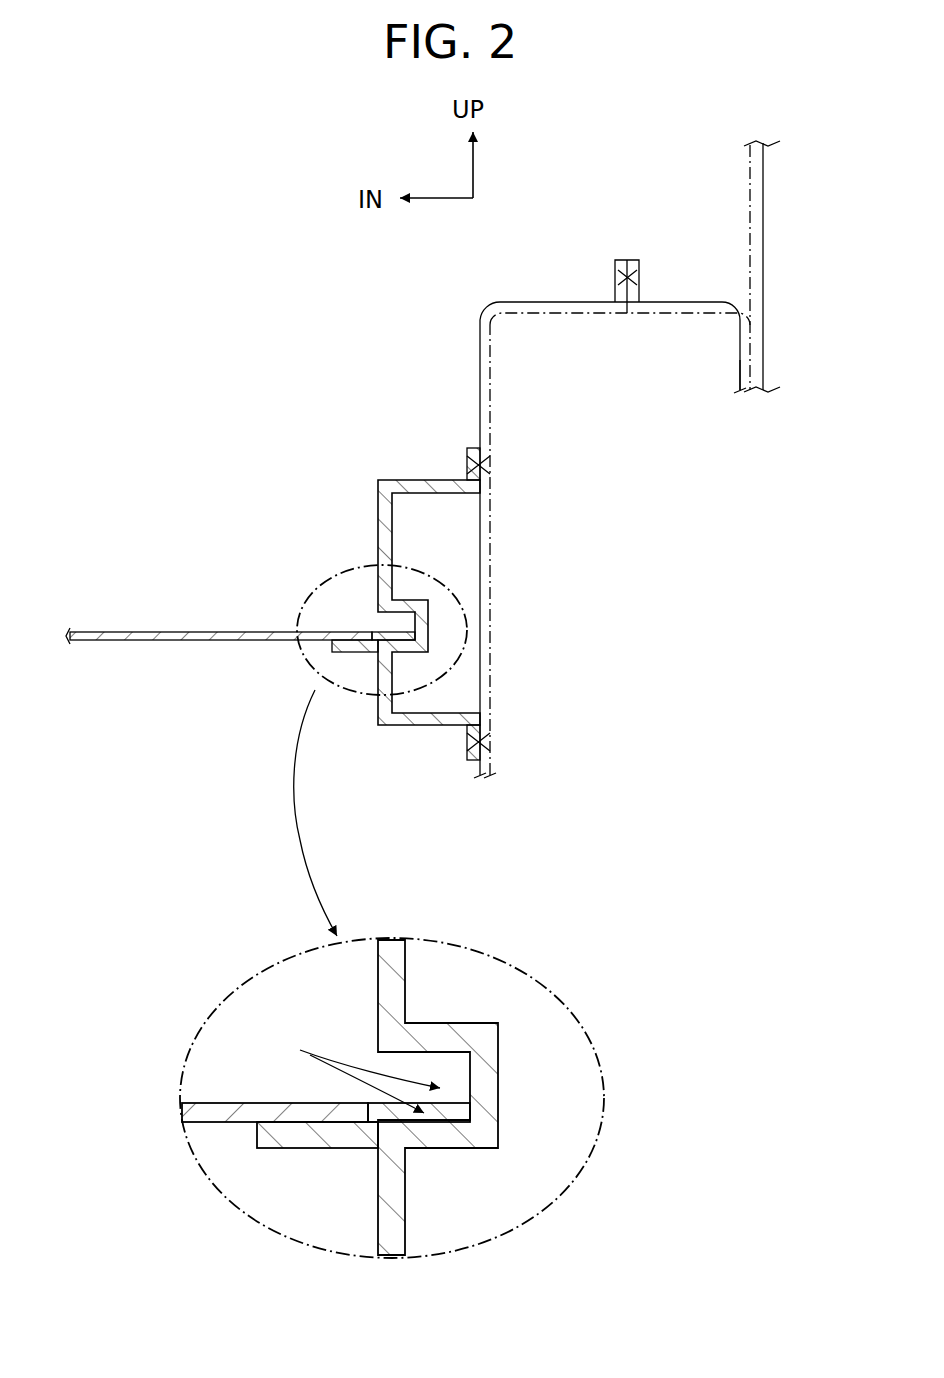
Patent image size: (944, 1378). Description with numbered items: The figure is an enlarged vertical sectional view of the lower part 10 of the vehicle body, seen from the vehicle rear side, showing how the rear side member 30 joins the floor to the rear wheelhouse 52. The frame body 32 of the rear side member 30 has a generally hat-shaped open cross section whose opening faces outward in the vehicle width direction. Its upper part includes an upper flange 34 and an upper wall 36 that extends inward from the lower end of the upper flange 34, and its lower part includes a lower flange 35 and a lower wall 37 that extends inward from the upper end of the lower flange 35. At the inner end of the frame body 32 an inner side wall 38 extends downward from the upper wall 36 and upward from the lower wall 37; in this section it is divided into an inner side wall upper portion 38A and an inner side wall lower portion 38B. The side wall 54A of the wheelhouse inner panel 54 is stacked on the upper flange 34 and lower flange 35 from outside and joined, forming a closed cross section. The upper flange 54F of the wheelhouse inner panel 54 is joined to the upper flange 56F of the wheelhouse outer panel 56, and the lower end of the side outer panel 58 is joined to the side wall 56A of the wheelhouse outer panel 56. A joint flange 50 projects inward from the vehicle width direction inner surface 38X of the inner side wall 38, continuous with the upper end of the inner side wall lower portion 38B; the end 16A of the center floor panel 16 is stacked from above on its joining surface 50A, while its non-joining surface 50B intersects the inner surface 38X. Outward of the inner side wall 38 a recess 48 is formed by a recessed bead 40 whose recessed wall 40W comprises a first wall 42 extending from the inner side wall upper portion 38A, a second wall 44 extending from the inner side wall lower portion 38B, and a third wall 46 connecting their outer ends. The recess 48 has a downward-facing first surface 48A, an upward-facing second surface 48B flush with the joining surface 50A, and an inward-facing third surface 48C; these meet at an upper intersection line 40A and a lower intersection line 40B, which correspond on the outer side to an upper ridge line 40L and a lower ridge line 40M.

The lower part of the vehicle body 10 is at (71, 419).
The center floor panel 16 is at (143, 627).
The end of the center floor panel 16A is at (335, 633).
The rear side member 30 is at (337, 345).
The frame body 32 is at (423, 397).
The upper flange 34 is at (467, 460).
The lower flange 35 is at (468, 735).
The upper wall 36 is at (425, 480).
The lower wall 37 is at (425, 727).
The inner side wall 38 is at (378, 505).
The inner side wall upper portion 38A is at (378, 548).
The inner side wall lower portion 38B is at (380, 715).
The vehicle width direction inner surface 38X is at (380, 705).
The recessed bead 40 is at (375, 1052).
The upper intersection line 40A is at (472, 1054).
The lower intersection line 40B is at (498, 1135).
The upper ridge line 40L is at (498, 1025).
The lower ridge line 40M is at (458, 1150).
The recessed wall 40W is at (350, 1090).
The first wall 42 is at (443, 1016).
The second wall 44 is at (406, 1225).
The third wall 46 is at (511, 1083).
The recess 48 is at (397, 623).
The first surface 48A is at (453, 1056).
The second surface 48B is at (443, 1154).
The third surface 48C is at (472, 1100).
The joint flange 50 is at (351, 917).
The joining surface 50A is at (325, 628).
The non-joining surface 50B is at (285, 1150).
The rear wheelhouse 52 is at (612, 458).
The wheelhouse inner panel 54 is at (612, 485).
The side wall of the wheelhouse inner panel 54A is at (492, 563).
The upper flange of the wheelhouse inner panel 54F is at (615, 277).
The wheelhouse outer panel 56 is at (679, 282).
The side wall of the wheelhouse outer panel 56A is at (737, 377).
The upper flange of the wheelhouse outer panel 56F is at (640, 277).
The side outer panel 58 is at (765, 253).